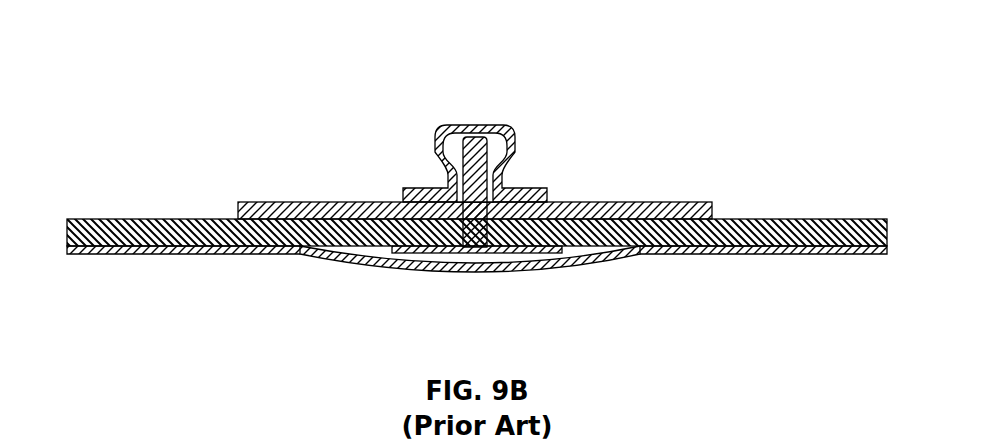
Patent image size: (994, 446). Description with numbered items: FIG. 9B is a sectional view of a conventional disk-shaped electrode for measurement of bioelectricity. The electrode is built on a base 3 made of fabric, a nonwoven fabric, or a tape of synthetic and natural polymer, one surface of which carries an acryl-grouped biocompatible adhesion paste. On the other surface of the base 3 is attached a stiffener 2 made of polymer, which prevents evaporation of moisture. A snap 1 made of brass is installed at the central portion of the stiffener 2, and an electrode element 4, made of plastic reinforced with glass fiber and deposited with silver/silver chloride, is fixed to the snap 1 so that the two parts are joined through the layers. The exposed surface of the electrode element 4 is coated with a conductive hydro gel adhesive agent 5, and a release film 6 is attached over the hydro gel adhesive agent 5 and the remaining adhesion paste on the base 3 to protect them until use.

The snap 1 is at (493, 131).
The stiffener 2 is at (645, 213).
The base 3 is at (855, 230).
The electrode element 4 is at (476, 249).
The conductive hydro gel adhesive agent 5 is at (572, 256).
The release film 6 is at (790, 255).